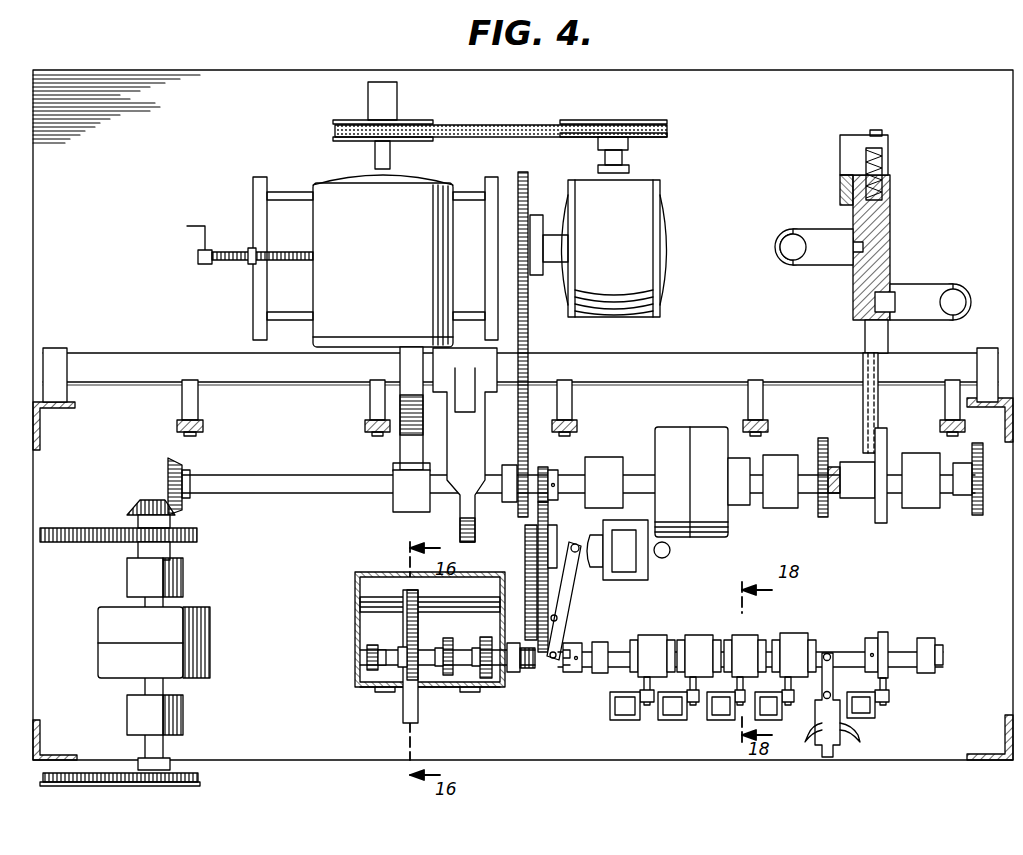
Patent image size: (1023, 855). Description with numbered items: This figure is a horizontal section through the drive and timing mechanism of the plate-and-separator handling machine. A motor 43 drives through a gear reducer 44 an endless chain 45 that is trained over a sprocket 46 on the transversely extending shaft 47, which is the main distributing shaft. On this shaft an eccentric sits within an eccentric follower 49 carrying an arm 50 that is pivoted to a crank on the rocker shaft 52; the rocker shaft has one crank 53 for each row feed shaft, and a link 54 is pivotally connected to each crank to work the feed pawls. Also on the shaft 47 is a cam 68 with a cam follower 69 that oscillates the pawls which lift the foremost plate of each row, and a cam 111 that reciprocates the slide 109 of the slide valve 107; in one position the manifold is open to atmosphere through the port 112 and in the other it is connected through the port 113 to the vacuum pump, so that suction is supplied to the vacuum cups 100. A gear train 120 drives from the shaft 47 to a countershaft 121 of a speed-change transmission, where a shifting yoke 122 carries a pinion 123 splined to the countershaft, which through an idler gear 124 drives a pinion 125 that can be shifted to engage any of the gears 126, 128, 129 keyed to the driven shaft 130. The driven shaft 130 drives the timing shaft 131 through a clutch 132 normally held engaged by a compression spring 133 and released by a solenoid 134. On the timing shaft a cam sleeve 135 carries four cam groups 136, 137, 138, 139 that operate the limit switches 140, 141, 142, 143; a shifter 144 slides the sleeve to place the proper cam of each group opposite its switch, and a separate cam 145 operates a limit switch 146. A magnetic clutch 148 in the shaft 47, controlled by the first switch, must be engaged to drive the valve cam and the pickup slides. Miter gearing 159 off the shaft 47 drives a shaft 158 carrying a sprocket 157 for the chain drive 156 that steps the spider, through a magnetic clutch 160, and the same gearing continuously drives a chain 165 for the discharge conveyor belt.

The motor 43 is at (335, 195).
The gear reducer 44 is at (637, 208).
The endless chain 45 is at (530, 337).
The sprocket 46 is at (542, 486).
The transversely extending shaft 47 is at (298, 484).
The eccentric follower 49 is at (405, 500).
The arm 50 is at (410, 453).
The rocker shaft 52 is at (738, 372).
The crank 53 is at (198, 403).
The link 54 is at (203, 426).
The cam 68 is at (823, 446).
The cam follower 69 is at (836, 466).
The vacuum cup 100 is at (878, 396).
The slide valve 107 is at (935, 182).
The slide 109 is at (888, 262).
The cam 111 is at (880, 508).
The port 112 is at (888, 243).
The port 113 is at (860, 300).
The gear train 120 is at (532, 586).
The countershaft 121 is at (365, 600).
The shifting yoke 122 is at (410, 703).
The pinion 123 is at (412, 600).
The idler gear 124 is at (418, 623).
The pinion 125 is at (417, 675).
The gear 126 is at (367, 655).
The gear 128 is at (451, 677).
The gear 129 is at (490, 680).
The driven shaft 130 is at (398, 664).
The timing shaft 131 is at (620, 655).
The clutch 132 is at (578, 673).
The compression spring 133 is at (530, 672).
The solenoid 134 is at (628, 560).
The cam sleeve 135 is at (820, 660).
The cam group 136 is at (652, 647).
The cam group 137 is at (700, 645).
The cam group 138 is at (748, 648).
The cam group 139 is at (797, 645).
The limit switch 140 is at (628, 708).
The limit switch 141 is at (670, 710).
The limit switch 142 is at (718, 710).
The limit switch 143 is at (770, 710).
The shifter 144 is at (840, 735).
The cam 145 is at (883, 648).
The limit switch 146 is at (868, 710).
The magnetic clutch 148 is at (670, 440).
The chain drive 156 is at (58, 783).
The sprocket 157 is at (195, 777).
The shaft 158 is at (160, 687).
The miter gearing 159 is at (165, 493).
The magnetic clutch 160 is at (120, 628).
The chain 165 is at (70, 532).